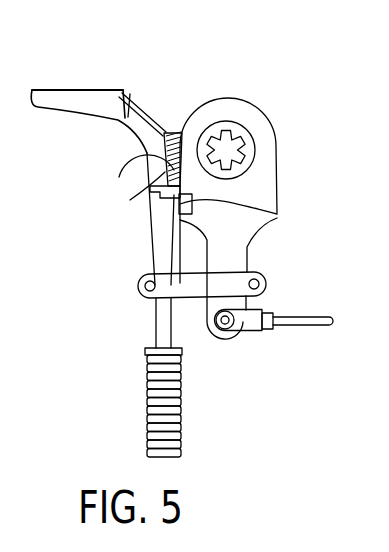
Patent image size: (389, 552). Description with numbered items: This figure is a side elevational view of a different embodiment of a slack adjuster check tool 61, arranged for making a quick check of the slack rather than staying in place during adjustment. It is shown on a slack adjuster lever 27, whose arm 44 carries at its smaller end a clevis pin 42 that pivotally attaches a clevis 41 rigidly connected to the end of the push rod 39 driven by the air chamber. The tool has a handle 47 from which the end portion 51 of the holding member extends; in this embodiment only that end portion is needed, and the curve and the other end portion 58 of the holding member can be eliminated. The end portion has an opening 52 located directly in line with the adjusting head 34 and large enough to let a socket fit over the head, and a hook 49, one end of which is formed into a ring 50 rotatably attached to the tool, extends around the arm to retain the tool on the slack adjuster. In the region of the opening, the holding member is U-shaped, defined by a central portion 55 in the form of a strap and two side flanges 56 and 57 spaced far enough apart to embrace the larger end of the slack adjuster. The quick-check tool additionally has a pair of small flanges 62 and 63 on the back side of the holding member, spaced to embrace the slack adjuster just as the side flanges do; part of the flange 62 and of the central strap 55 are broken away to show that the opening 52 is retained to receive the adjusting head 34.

The slack adjuster lever 27 is at (278, 177).
The adjusting head 34 is at (150, 187).
The push rod 39 is at (300, 315).
The clevis 41 is at (253, 327).
The clevis pin 42 is at (225, 322).
The arm 44 is at (252, 250).
The handle 47 is at (178, 427).
The hook 49 is at (263, 279).
The ring 50 is at (142, 292).
The end portion 51 is at (148, 243).
The opening 52 is at (147, 158).
The central portion 55 is at (150, 100).
The side flange 56 is at (132, 97).
The side flange 57 is at (85, 103).
The other end portion 58 is at (48, 90).
The slack adjuster check tool 61 is at (142, 327).
The flange 62 is at (279, 215).
The flange 63 is at (180, 130).